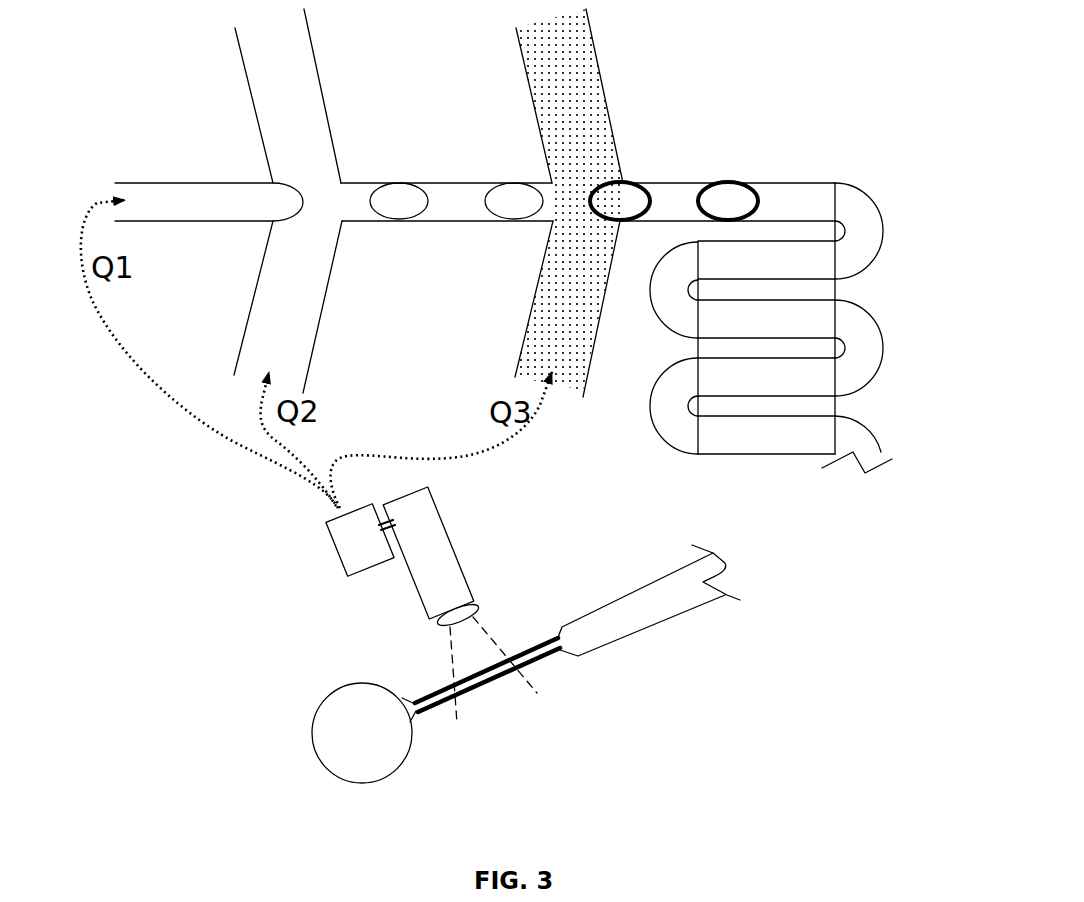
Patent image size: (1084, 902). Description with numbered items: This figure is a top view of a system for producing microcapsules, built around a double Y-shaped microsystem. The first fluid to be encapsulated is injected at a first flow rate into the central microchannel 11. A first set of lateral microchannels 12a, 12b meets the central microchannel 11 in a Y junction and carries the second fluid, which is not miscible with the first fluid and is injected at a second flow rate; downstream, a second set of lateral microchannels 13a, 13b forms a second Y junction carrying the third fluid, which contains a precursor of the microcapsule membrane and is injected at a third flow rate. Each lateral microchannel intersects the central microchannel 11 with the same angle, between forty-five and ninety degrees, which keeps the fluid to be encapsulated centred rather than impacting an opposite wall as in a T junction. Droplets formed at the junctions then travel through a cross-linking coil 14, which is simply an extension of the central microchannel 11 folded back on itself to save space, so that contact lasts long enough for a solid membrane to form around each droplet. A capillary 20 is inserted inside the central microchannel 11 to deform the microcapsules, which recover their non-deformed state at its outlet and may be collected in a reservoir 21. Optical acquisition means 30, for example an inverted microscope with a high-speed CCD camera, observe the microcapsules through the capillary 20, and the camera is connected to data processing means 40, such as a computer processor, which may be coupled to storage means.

The central microchannel 11 is at (167, 180).
The lateral microchannel of the first set 12a is at (334, 106).
The lateral microchannel of the first set 12b is at (323, 315).
The lateral microchannel of the second set 13a is at (535, 125).
The lateral microchannel of the second set 13b is at (535, 278).
The cross-linking coil 14 is at (876, 190).
The capillary 20 is at (546, 666).
The reservoir 21 is at (310, 734).
The optical acquisition means 30 is at (461, 538).
The data processing means 40 is at (338, 550).